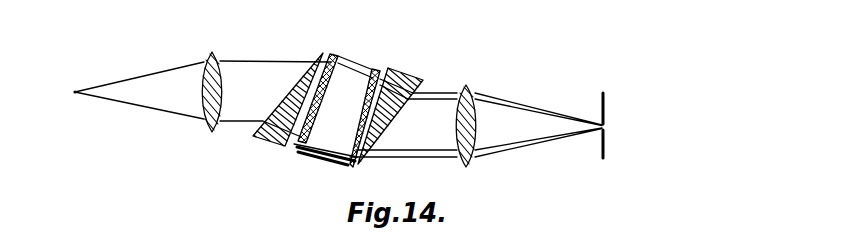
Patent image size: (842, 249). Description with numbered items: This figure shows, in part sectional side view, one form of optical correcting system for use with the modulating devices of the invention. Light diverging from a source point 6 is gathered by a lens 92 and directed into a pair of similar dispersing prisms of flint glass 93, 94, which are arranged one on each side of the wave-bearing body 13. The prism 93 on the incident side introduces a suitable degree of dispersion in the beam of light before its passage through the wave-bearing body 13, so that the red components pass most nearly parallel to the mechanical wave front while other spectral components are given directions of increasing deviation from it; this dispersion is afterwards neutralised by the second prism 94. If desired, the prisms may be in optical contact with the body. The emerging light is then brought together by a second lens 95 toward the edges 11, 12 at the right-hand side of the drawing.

The light source point 6 is at (75, 92).
The collimating lens 92 is at (203, 72).
The dispersing prism 93 is at (309, 69).
The wave-bearing body 13 is at (338, 56).
The dispersing prism 94 is at (410, 75).
The focusing lens 95 is at (474, 107).
The upper screen edge 11 is at (600, 106).
The lower screen edge 12 is at (598, 133).